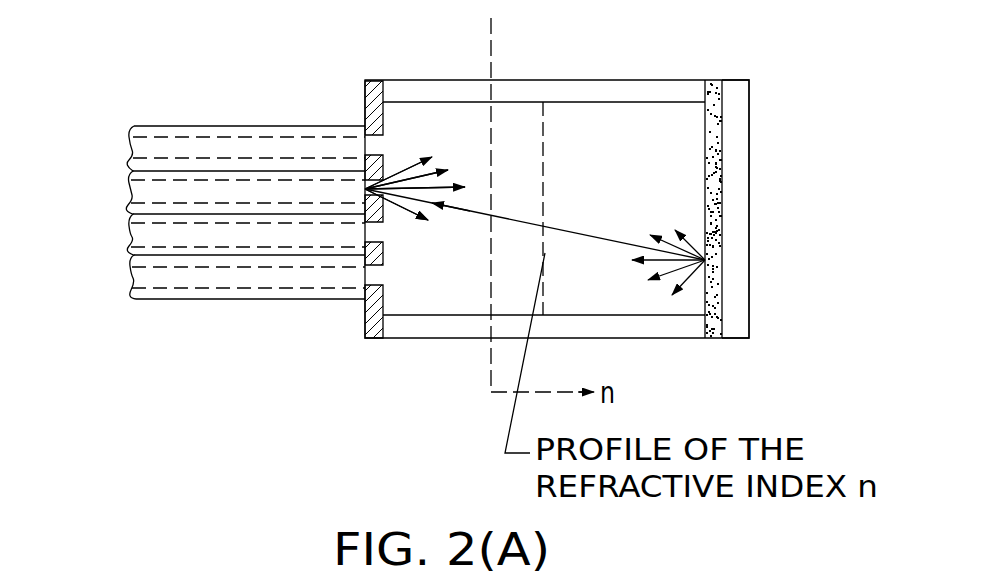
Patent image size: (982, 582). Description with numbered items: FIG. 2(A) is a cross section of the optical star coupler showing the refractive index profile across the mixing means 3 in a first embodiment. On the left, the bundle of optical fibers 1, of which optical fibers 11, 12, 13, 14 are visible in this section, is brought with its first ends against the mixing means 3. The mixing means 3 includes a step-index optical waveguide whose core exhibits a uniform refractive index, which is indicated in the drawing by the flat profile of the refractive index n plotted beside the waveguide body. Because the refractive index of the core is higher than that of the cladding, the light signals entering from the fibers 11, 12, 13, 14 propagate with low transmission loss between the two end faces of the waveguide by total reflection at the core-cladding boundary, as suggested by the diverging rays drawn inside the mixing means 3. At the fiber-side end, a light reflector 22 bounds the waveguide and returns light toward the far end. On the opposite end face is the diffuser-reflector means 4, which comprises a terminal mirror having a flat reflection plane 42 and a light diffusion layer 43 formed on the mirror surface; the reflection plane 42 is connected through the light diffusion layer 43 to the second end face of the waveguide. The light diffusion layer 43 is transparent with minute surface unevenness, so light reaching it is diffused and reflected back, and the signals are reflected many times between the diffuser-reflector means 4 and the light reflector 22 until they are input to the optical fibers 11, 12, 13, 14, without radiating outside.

The optical fiber bundle 1 is at (217, 73).
The optical fiber 11 is at (133, 147).
The optical fiber 12 is at (130, 192).
The optical fiber 13 is at (140, 233).
The optical fiber 14 is at (148, 275).
The mixing means 3 is at (560, 78).
The diffuser-reflector means 4 is at (752, 68).
The light reflector 22 is at (385, 247).
The reflection plane 42 is at (723, 283).
The light diffusion layer 43 is at (713, 327).